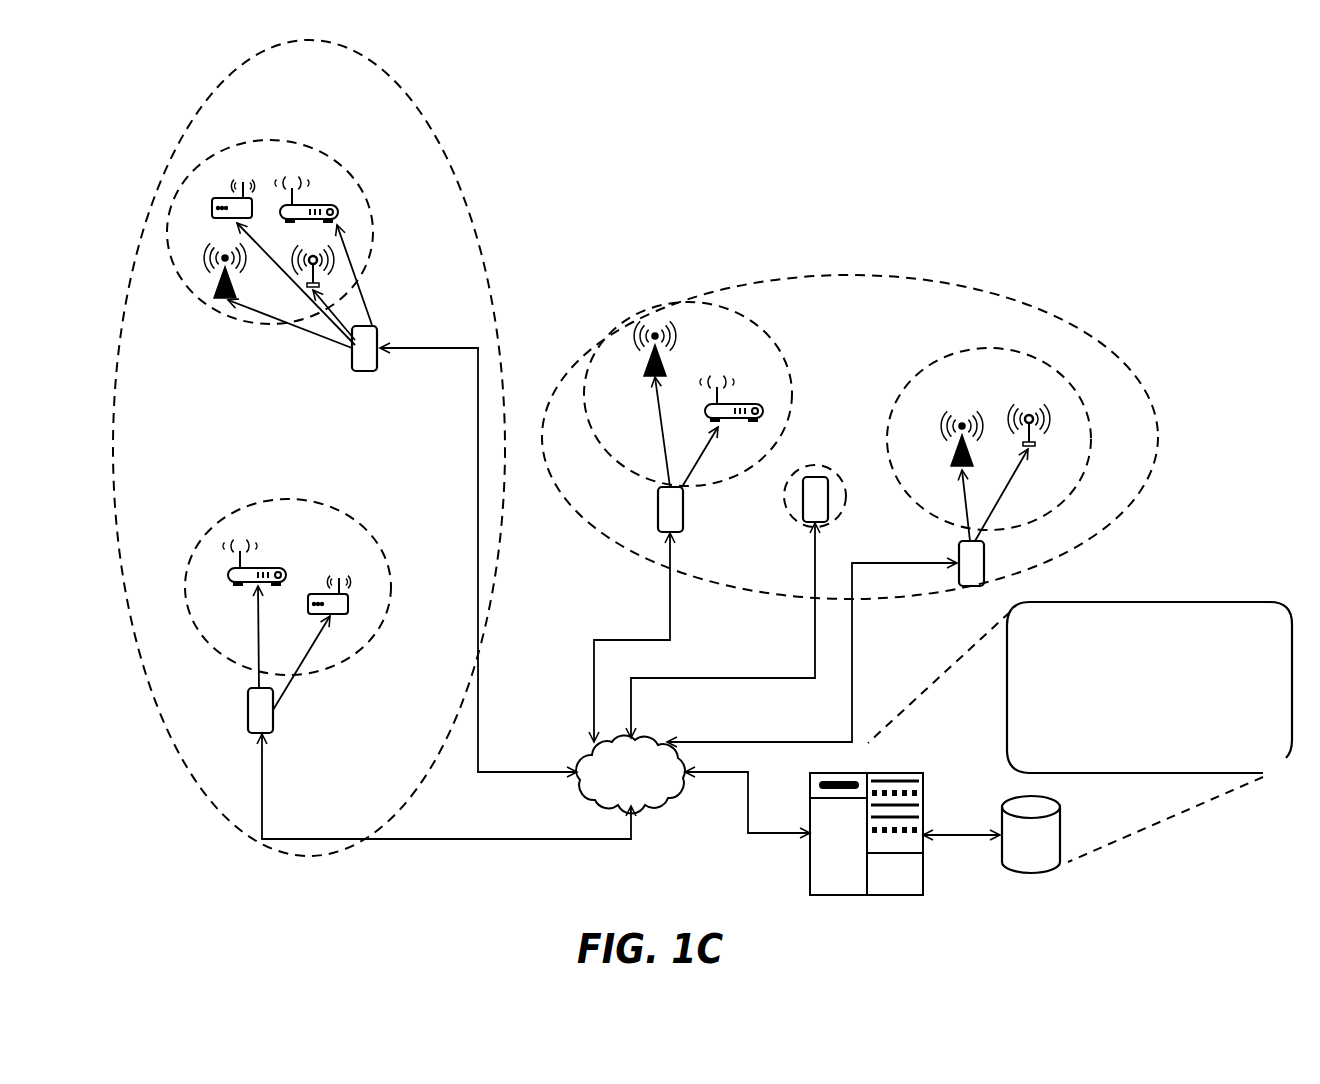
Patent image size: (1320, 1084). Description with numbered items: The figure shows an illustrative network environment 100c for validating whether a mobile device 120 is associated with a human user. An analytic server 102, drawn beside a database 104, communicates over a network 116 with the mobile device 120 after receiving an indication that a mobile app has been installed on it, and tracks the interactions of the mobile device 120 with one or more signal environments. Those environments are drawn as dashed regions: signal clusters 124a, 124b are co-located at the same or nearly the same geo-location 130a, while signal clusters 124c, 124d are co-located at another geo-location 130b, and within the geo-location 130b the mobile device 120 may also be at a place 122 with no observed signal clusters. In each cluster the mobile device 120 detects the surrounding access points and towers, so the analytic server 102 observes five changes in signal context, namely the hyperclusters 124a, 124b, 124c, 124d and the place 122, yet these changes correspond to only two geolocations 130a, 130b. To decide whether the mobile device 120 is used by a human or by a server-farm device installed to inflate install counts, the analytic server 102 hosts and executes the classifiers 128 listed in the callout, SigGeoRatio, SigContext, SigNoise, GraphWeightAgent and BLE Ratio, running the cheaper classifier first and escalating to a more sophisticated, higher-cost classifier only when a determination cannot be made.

The network environment 100c is at (1097, 142).
The analytic server 102 is at (830, 878).
The database 104 is at (1030, 858).
The network 116 is at (630, 775).
The mobile device 120 is at (377, 332).
The place with no observed signal clusters 122 is at (842, 512).
The signal cluster 124a is at (303, 502).
The signal cluster 124b is at (280, 138).
The signal cluster 124c is at (788, 382).
The signal cluster 124d is at (1058, 372).
The classifiers 128 is at (1147, 600).
The geo-location 130a is at (463, 197).
The geo-location 130b is at (1155, 433).